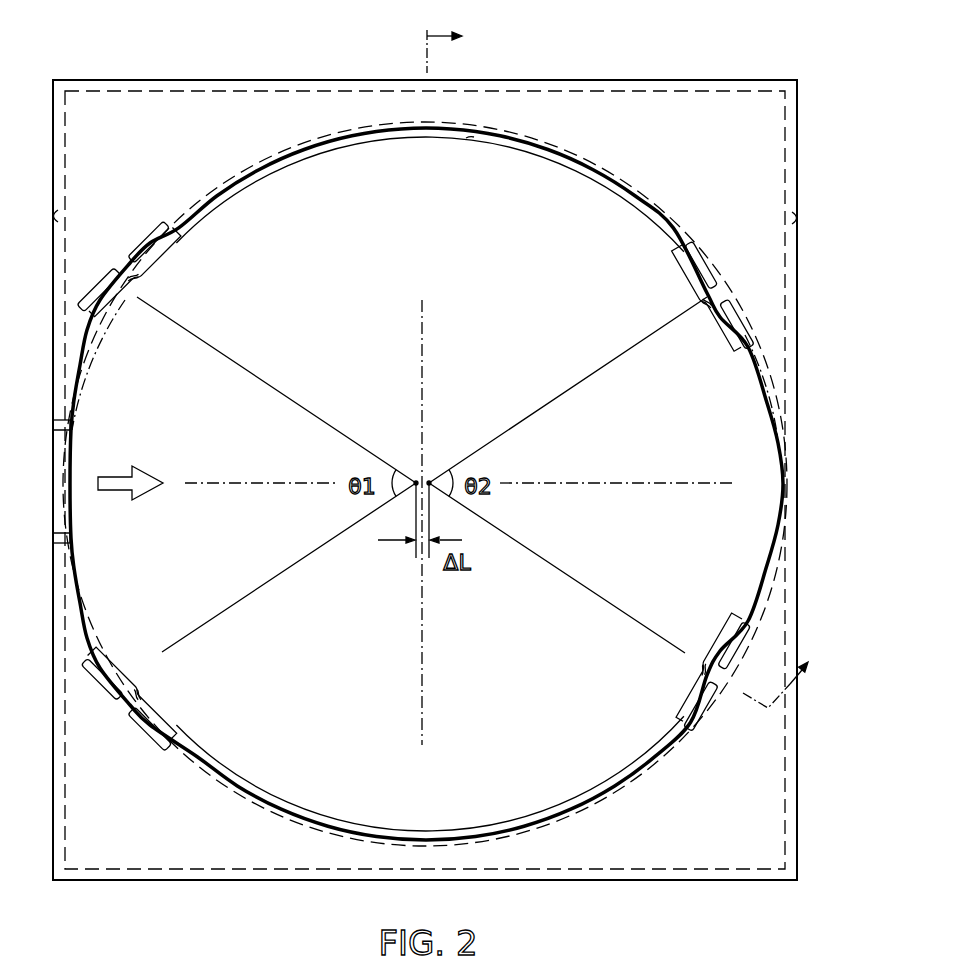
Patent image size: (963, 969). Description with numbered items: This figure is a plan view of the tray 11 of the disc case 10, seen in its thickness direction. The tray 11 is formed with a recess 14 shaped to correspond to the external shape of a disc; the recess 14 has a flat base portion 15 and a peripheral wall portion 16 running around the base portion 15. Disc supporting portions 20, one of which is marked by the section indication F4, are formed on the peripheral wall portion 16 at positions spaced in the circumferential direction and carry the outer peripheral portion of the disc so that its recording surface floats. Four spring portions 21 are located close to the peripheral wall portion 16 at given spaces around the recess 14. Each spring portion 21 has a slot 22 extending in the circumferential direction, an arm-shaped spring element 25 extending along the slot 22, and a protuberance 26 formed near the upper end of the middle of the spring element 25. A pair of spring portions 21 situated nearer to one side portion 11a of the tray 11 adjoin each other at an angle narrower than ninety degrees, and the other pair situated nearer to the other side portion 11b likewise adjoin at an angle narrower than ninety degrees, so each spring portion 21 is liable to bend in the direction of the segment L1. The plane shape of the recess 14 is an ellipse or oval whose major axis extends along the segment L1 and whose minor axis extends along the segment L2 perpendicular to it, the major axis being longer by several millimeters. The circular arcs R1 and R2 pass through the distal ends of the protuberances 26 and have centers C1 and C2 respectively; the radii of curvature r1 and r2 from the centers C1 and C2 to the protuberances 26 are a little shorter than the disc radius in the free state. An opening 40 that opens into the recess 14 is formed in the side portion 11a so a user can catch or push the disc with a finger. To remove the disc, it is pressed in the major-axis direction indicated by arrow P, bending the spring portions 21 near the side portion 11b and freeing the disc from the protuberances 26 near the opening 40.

The disc case 10 is at (752, 76).
The tray 11 is at (663, 92).
The one side portion 11a is at (60, 216).
The other side portion 11b is at (788, 218).
The recess 14 is at (386, 229).
The base portion 15 is at (306, 168).
The peripheral wall portion 16 is at (380, 143).
The disc supporting portion 20 is at (470, 142).
The spring portion 21 is at (165, 280).
The slot 22 is at (133, 264).
The spring element 25 is at (100, 301).
The protuberance 26 is at (130, 297).
The opening 40 is at (73, 470).
The arrow P is at (124, 492).
The section line F4 is at (629, 365).
The segment L1 is at (217, 481).
The segment L2 is at (433, 339).
The center C1 is at (413, 479).
The center C2 is at (431, 479).
The circular arc R1 is at (100, 350).
The circular arc R2 is at (745, 357).
The radius of curvature r1 is at (272, 378).
The radius of curvature r2 is at (558, 398).